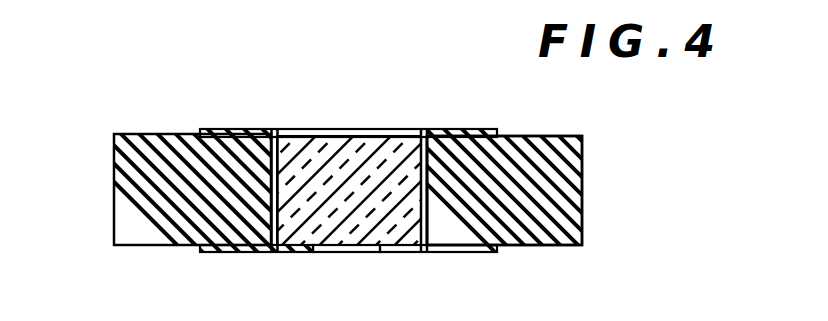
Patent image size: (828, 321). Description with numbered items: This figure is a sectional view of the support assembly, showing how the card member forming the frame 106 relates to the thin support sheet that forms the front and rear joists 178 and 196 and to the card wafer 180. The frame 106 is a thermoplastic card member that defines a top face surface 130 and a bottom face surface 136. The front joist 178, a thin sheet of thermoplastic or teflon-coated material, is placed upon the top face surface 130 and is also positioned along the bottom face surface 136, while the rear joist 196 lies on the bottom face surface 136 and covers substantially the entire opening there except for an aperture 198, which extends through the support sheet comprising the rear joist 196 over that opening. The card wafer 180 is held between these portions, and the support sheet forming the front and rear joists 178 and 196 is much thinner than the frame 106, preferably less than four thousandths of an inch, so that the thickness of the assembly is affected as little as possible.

The frame 106 is at (126, 187).
The top face surface 130 is at (546, 137).
The bottom face surface 136 is at (432, 252).
The front joist 178 is at (233, 129).
The card wafer 180 is at (357, 158).
The rear joist 196 is at (262, 252).
The aperture 198 is at (348, 252).